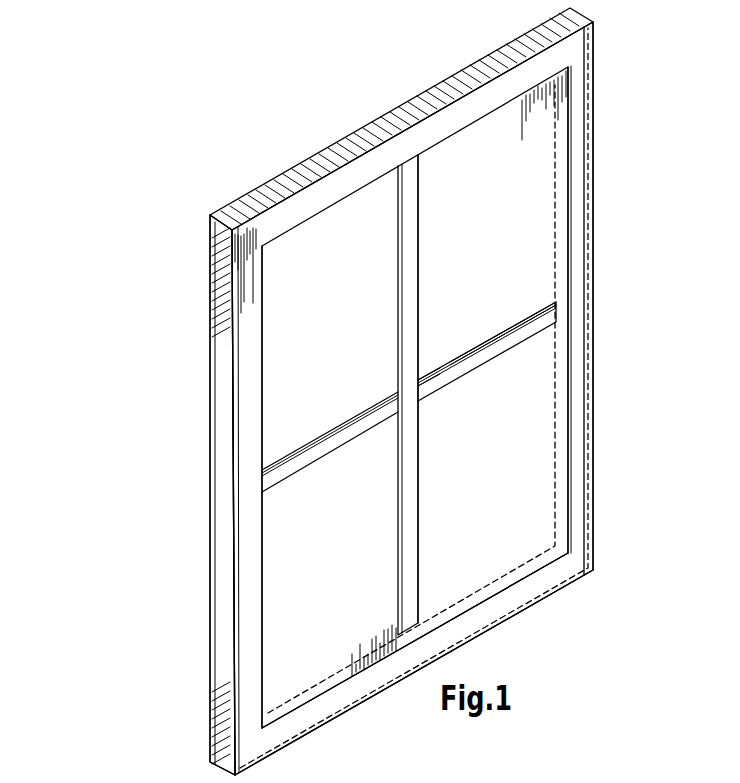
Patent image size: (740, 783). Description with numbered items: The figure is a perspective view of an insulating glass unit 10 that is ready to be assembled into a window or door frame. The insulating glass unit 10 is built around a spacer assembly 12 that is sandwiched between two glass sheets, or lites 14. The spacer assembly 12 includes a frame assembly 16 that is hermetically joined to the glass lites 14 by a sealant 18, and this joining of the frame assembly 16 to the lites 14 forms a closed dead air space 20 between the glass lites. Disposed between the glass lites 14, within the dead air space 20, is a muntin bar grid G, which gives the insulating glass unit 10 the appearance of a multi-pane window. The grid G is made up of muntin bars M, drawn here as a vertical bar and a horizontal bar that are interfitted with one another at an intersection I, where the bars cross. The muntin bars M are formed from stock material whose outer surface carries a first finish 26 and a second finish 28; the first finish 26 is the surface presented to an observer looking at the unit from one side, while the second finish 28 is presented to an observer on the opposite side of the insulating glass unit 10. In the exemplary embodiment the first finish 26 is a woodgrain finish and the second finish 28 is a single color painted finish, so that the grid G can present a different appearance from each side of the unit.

The insulating glass unit 10 is at (148, 625).
The spacer assembly 12 is at (217, 767).
The lites 14 is at (290, 523).
The frame assembly 16 is at (297, 700).
The sealant 18 is at (222, 416).
The dead air space 20 is at (553, 455).
The first finish 26 is at (397, 242).
The second finish 28 is at (412, 254).
The muntin bars M is at (327, 447).
The intersection I is at (423, 367).
The muntin bar grid G is at (507, 330).